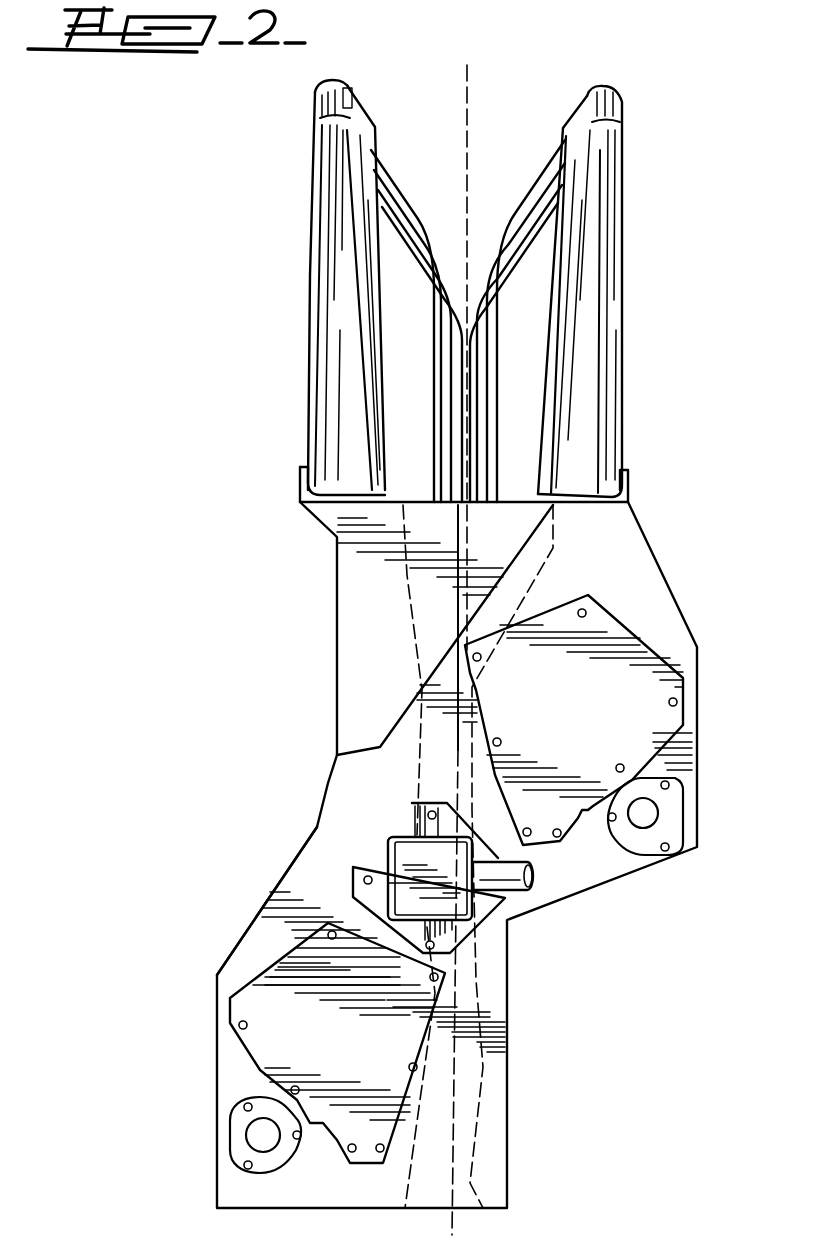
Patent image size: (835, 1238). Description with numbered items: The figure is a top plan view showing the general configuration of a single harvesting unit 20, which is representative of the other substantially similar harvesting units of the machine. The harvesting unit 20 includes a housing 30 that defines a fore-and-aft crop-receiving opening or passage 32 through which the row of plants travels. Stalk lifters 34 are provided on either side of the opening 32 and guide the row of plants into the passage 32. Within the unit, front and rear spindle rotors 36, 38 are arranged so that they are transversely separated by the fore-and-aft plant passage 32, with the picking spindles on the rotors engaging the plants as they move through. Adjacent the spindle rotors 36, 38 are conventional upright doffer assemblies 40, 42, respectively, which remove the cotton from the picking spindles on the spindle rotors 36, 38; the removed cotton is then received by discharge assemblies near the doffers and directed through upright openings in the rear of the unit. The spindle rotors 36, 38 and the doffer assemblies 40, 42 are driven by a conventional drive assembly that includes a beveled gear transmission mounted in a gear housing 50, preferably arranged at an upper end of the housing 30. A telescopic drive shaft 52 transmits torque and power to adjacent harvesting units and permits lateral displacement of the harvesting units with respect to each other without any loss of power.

The harvesting unit 20 is at (337, 737).
The housing 30 is at (347, 818).
The crop-receiving opening or passage 32 is at (413, 618).
The stalk lifters 34 is at (570, 142).
The front spindle rotor 36 is at (586, 731).
The rear spindle rotor 38 is at (358, 1051).
The doffer assembly 40 is at (672, 827).
The doffer assembly 42 is at (248, 1143).
The gear housing 50 is at (403, 887).
The telescopic drive shaft 52 is at (513, 892).